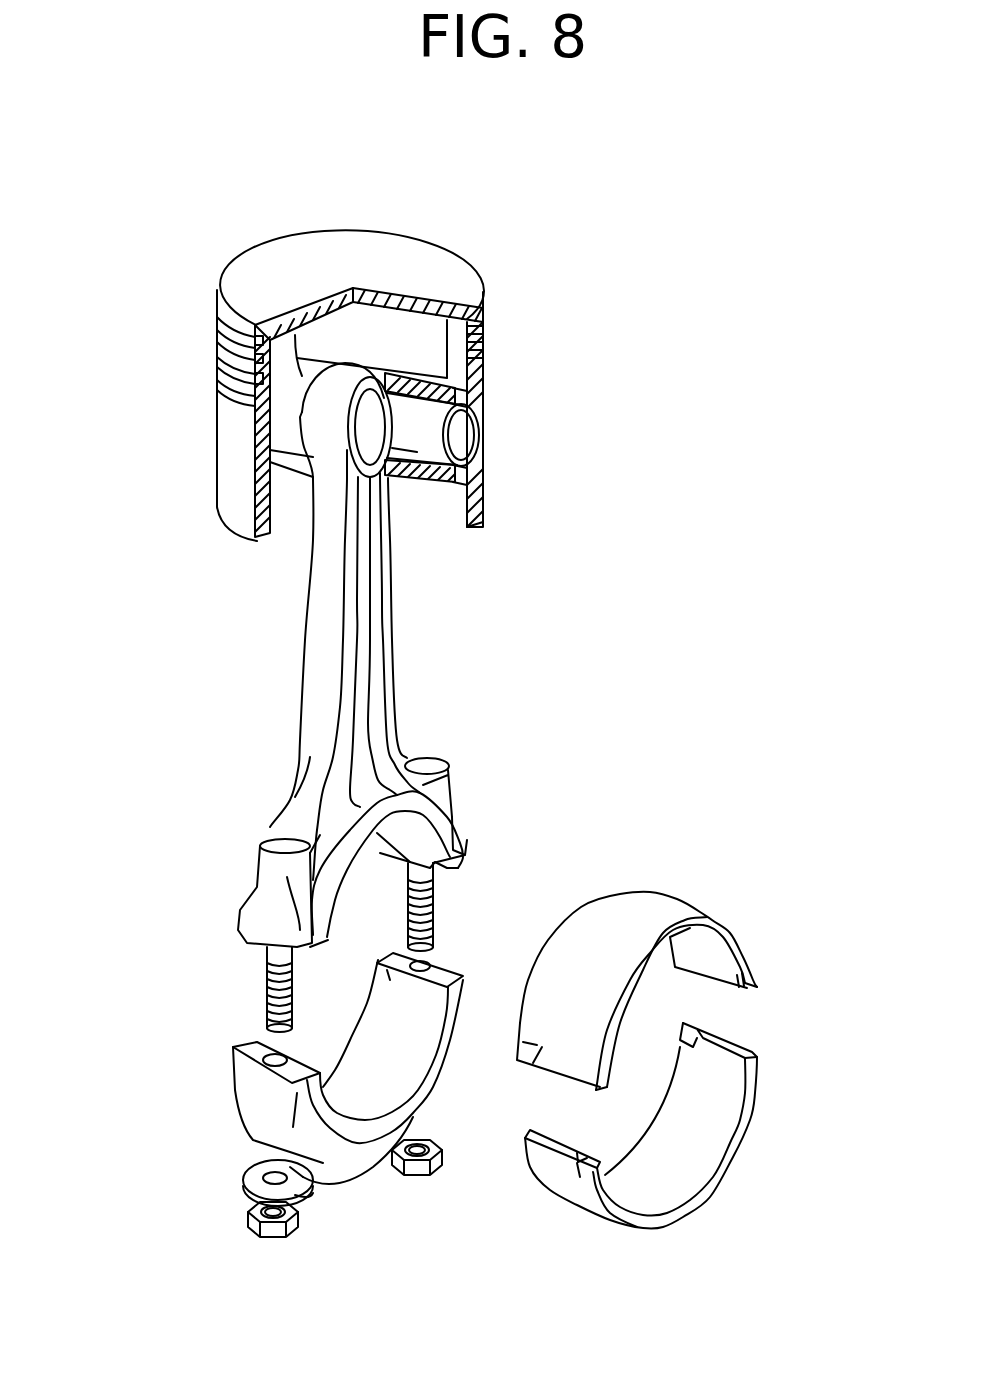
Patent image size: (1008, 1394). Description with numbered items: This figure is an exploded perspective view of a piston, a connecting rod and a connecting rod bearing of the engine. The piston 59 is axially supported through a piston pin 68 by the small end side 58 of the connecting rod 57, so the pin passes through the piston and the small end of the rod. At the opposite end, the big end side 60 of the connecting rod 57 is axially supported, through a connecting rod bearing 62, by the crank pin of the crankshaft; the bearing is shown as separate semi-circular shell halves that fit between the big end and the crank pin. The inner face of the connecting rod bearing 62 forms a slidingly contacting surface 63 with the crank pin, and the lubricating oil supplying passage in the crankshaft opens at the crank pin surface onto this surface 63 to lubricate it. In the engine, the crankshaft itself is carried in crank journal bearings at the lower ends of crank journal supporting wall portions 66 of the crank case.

The connecting rod 57 is at (585, 527).
The small end side 58 is at (310, 481).
The piston 59 is at (205, 315).
The big end side 60 is at (255, 882).
The connecting rod bearing 62 is at (665, 895).
The slidingly contacting surface 63 is at (685, 1168).
The crank journal supporting wall portion 66 is at (392, 616).
The piston pin 68 is at (487, 447).